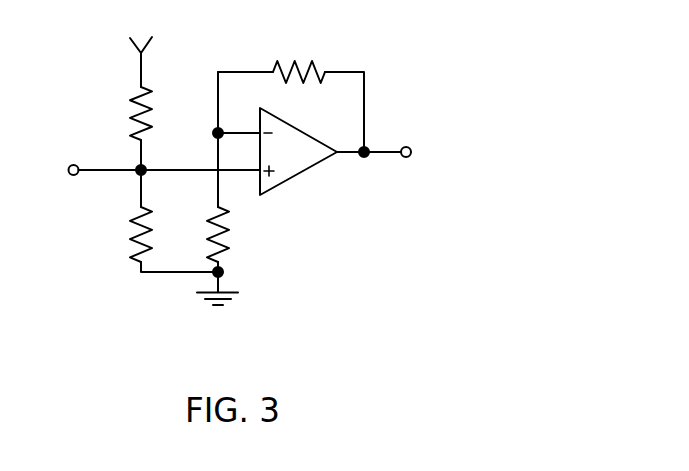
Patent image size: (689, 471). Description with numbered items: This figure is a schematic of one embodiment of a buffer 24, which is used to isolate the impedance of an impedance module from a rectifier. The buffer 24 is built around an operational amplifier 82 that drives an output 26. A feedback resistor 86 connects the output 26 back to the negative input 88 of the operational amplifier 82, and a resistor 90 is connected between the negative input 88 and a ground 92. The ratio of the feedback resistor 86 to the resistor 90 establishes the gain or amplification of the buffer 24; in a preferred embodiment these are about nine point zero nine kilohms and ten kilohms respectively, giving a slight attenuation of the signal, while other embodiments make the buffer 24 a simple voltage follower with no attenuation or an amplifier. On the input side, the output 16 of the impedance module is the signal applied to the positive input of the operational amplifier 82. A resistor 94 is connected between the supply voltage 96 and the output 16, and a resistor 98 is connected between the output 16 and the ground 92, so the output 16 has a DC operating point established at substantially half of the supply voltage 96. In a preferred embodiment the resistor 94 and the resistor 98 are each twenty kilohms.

The output 16 is at (68, 165).
The buffer 24 is at (520, 73).
The output 26 is at (403, 147).
The operational amplifier 82 is at (302, 160).
The feedback resistor 86 is at (297, 62).
The negative input 88 is at (218, 93).
The resistor 90 is at (227, 245).
The ground 92 is at (222, 287).
The resistor 94 is at (131, 109).
The supply voltage 96 is at (130, 38).
The resistor 98 is at (130, 238).